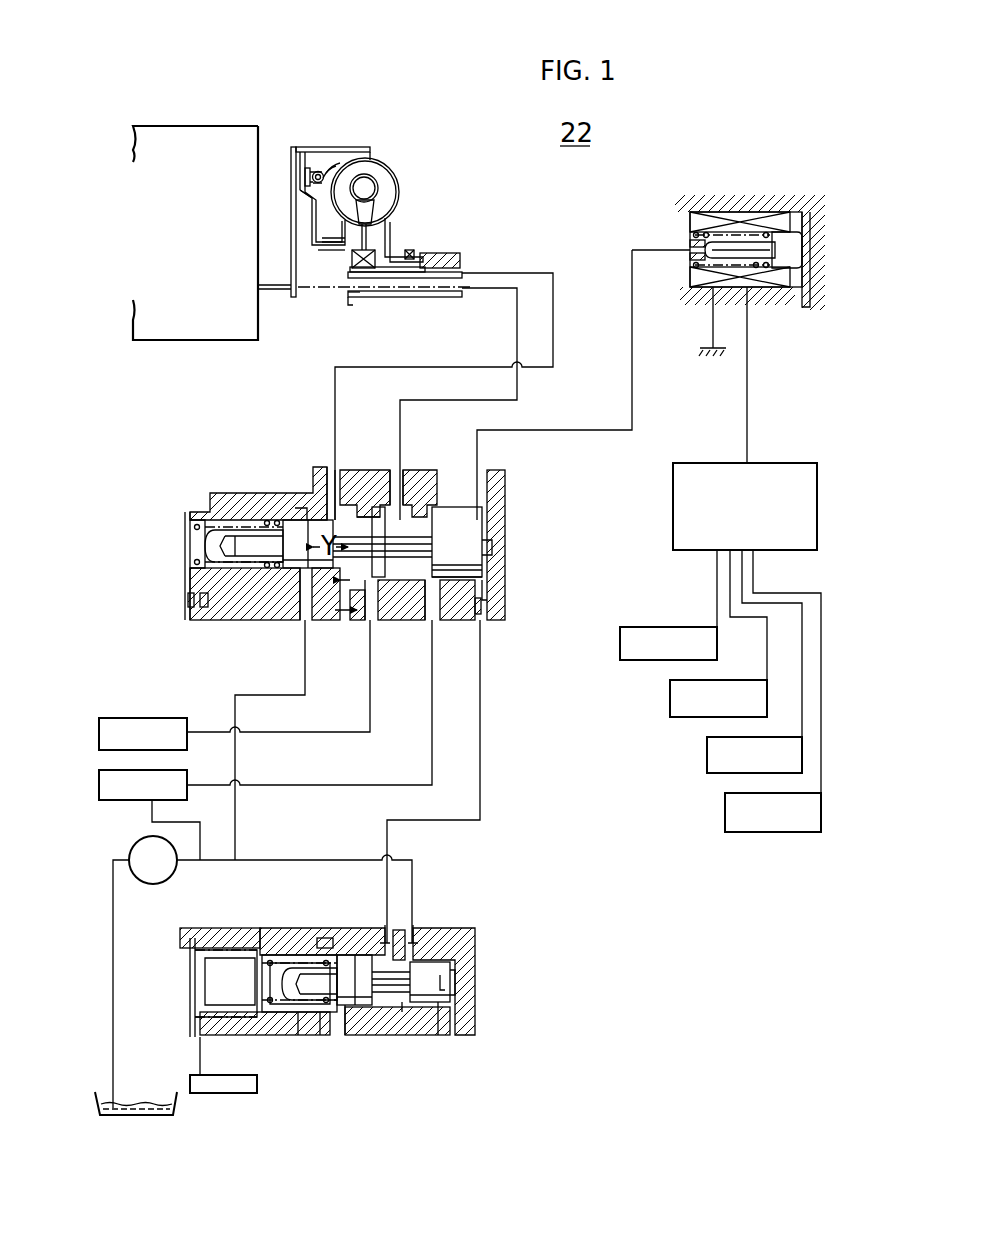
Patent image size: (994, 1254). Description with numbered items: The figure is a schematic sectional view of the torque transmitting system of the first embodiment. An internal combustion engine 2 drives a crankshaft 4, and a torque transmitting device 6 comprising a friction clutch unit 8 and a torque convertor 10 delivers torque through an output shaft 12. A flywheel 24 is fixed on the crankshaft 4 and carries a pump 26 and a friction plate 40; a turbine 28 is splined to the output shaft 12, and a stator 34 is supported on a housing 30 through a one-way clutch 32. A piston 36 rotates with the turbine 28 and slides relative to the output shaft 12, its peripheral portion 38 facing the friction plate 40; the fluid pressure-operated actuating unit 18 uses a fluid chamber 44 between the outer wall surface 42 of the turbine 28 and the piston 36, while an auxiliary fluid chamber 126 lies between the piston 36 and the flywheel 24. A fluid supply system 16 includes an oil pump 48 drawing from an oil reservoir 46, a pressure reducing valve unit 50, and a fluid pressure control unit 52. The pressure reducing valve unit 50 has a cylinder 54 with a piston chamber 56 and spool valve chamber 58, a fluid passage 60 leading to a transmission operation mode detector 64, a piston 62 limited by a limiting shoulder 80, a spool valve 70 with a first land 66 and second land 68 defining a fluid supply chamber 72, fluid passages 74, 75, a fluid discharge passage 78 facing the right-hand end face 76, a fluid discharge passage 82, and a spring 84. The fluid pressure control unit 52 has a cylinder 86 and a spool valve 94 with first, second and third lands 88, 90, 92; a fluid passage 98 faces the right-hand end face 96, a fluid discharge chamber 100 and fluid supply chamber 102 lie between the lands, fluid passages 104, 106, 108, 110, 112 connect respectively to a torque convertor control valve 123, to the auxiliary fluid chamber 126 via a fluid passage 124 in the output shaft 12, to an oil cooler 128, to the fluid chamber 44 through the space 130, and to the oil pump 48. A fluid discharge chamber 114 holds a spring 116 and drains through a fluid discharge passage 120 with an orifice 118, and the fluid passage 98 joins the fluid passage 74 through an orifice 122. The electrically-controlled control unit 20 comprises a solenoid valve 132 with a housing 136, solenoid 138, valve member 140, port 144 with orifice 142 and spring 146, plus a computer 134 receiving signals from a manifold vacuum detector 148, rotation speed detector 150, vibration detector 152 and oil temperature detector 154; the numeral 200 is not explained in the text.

The internal combustion engine 2 is at (218, 126).
The crankshaft 4 is at (276, 290).
The torque transmitting device 6 is at (334, 128).
The friction clutch unit 8 is at (306, 160).
The torque convertor 10 is at (400, 172).
The output shaft 12 is at (448, 298).
The fluid supply system 16 is at (484, 652).
The fluid pressure-operated actuating unit 18 is at (338, 296).
The electrically-controlled control unit 20 is at (672, 524).
The flywheel 24 is at (290, 206).
The pump 26 is at (400, 172).
The turbine 28 is at (370, 174).
The housing 30 is at (455, 262).
The one-way clutch 32 is at (380, 252).
The stator 34 is at (372, 210).
The piston 36 is at (330, 262).
The peripheral portion 38 is at (312, 170).
The friction plate 40 is at (300, 150).
The outer wall surface 42 is at (337, 165).
The fluid chamber 44 is at (334, 227).
The oil reservoir 46 is at (141, 1118).
The oil pump 48 is at (262, 972).
The pressure reducing valve unit 50 is at (459, 928).
The fluid pressure control unit 52 is at (506, 536).
The cylinder 54 is at (299, 1036).
The piston chamber 56 is at (233, 975).
The spool valve chamber 58 is at (325, 938).
The fluid passage 60 is at (201, 1038).
The piston 62 is at (288, 955).
The transmission operation mode detector 64 is at (236, 1095).
The first land 66 is at (452, 993).
The second land 68 is at (360, 1020).
The spool valve 70 is at (403, 1013).
The fluid supply chamber 72 is at (393, 1036).
The fluid passage 74 is at (380, 943).
The fluid passage 75 is at (418, 943).
The right-hand end face 76 is at (456, 972).
The fluid discharge passage 78 is at (439, 1022).
The limiting shoulder 80 is at (321, 1036).
The fluid discharge passage 82 is at (346, 1034).
The spring 84 is at (286, 1016).
The cylinder 86 is at (318, 496).
The first land 88 is at (460, 506).
The second land 90 is at (380, 580).
The third land 92 is at (290, 524).
The spool valve 94 is at (272, 564).
The right-hand end face 96 is at (494, 572).
The fluid passage 98 is at (494, 592).
The fluid discharge chamber 100 is at (380, 506).
The fluid supply chamber 102 is at (346, 612).
The fluid passage 104 is at (441, 616).
The fluid passage 106 is at (400, 490).
The fluid passage 108 is at (375, 624).
The fluid passage 110 is at (335, 468).
The fluid passage 112 is at (301, 618).
The fluid discharge chamber 114 is at (190, 548).
The spring 116 is at (200, 564).
The orifice 118 is at (188, 600).
The fluid discharge passage 120 is at (202, 612).
The orifice 122 is at (494, 606).
The torque convertor control valve 123 is at (149, 815).
The fluid passage 124 is at (388, 298).
The auxiliary fluid chamber 126 is at (300, 240).
The oil cooler 128 is at (143, 734).
The space 130 is at (436, 254).
The solenoid valve 132 is at (746, 182).
The computer 134 is at (745, 506).
The housing 136 is at (810, 215).
The solenoid 138 is at (790, 220).
The valve member 140 is at (736, 245).
The orifice 142 is at (690, 243).
The port 144 is at (690, 257).
The spring 146 is at (758, 268).
The manifold vacuum detector 148 is at (668, 643).
The rotation speed detector 150 is at (718, 698).
The vibration detector 152 is at (754, 755).
The oil temperature detector 154 is at (773, 812).
The pivot pin 200 is at (326, 176).